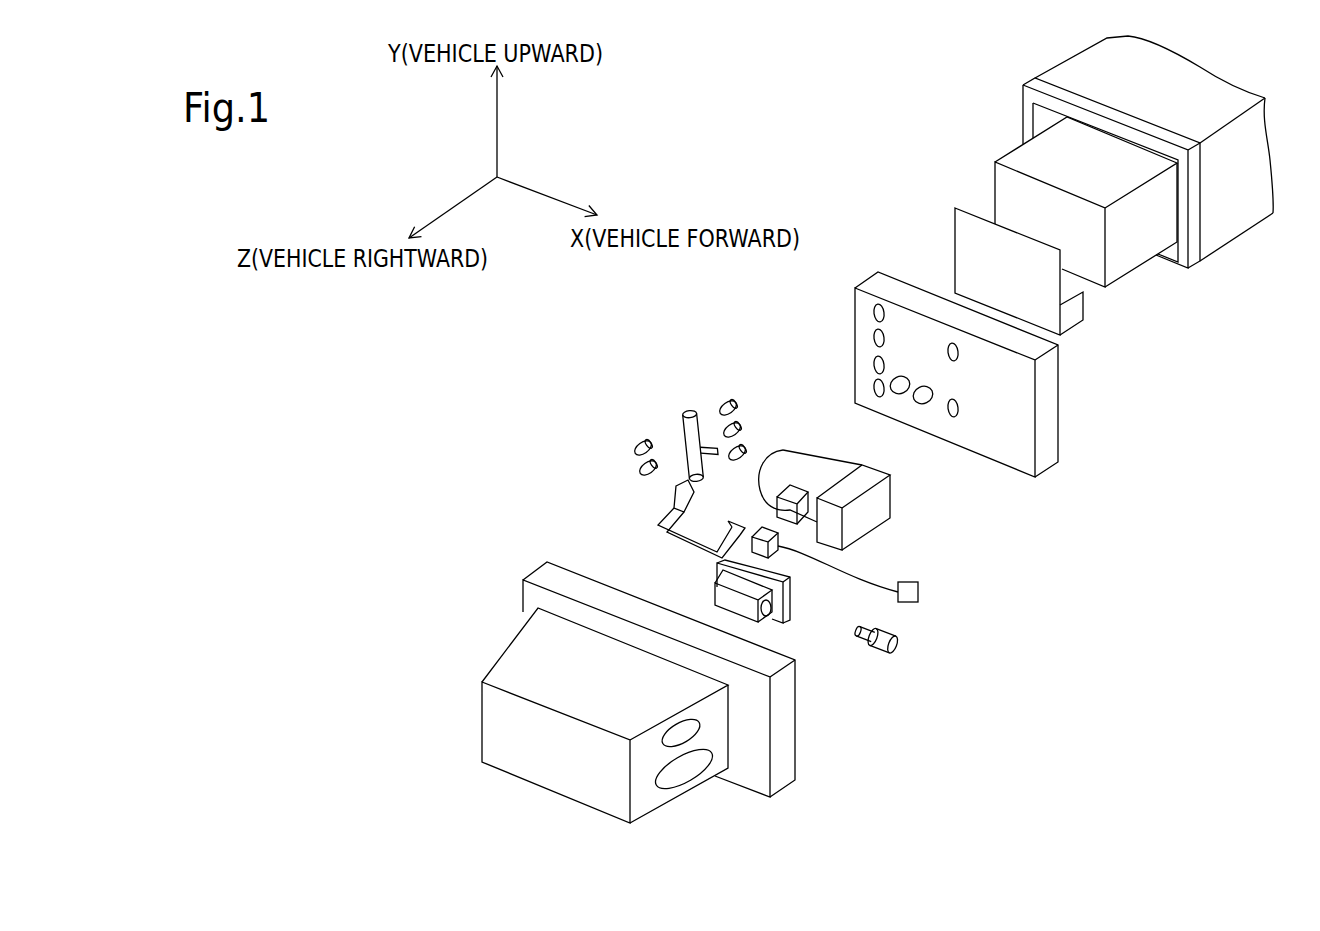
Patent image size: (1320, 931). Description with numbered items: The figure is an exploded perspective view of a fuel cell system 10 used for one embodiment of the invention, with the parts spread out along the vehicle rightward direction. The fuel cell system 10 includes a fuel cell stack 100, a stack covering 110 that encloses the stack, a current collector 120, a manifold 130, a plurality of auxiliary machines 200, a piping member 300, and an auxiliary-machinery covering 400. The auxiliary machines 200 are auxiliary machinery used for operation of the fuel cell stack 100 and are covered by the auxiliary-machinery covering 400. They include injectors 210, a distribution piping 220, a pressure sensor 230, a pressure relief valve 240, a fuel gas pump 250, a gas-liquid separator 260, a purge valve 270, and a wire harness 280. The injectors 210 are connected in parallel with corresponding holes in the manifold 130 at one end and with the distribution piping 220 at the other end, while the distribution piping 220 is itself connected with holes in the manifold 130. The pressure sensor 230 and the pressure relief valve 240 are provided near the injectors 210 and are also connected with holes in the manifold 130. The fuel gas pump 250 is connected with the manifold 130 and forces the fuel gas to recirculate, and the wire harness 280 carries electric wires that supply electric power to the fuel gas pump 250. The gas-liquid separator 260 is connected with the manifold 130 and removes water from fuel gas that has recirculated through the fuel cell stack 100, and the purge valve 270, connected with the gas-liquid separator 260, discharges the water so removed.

The fuel cell system 10 is at (1206, 611).
The fuel cell stack 100 is at (1136, 281).
The stack covering 110 is at (1220, 252).
The current collector 120 is at (967, 210).
The manifold 130 is at (1070, 402).
The auxiliary machines 200 is at (1002, 617).
The injectors 210 is at (722, 395).
The distribution piping 220 is at (677, 411).
The pressure sensor 230 is at (635, 436).
The pressure relief valve 240 is at (635, 479).
The fuel gas pump 250 is at (823, 453).
The gas-liquid separator 260 is at (797, 614).
The purge valve 270 is at (902, 660).
The wire harness 280 is at (929, 594).
The piping member 300 is at (675, 543).
The auxiliary-machinery covering 400 is at (816, 770).